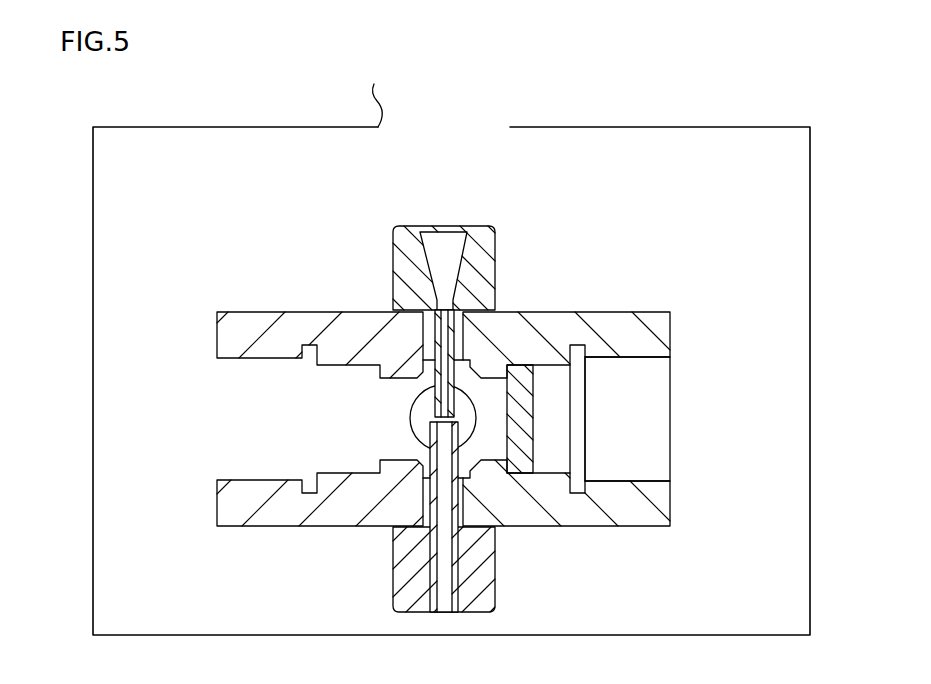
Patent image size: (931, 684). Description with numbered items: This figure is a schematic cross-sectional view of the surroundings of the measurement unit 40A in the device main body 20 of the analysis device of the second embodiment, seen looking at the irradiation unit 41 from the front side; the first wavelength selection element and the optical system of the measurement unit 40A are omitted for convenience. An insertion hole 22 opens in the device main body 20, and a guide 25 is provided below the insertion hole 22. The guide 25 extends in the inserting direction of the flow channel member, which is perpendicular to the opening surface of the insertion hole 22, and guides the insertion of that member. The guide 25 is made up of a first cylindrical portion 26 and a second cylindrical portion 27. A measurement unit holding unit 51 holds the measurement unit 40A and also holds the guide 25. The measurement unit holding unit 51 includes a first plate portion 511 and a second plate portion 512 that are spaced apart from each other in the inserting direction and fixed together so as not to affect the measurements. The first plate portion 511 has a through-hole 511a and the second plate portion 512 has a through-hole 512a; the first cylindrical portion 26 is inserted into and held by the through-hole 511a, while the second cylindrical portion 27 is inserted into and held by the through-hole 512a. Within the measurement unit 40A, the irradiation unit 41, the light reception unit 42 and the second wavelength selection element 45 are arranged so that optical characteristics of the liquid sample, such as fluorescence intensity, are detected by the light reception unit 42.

The device main body 20 is at (632, 127).
The insertion hole 22 is at (373, 94).
The guide 25 is at (469, 231).
The first cylindrical portion 26 is at (495, 242).
The second cylindrical portion 27 is at (485, 517).
The measurement unit 40A is at (727, 220).
The irradiation unit 41 is at (423, 431).
The light reception unit 42 is at (613, 417).
The second wavelength selection element 45 is at (517, 372).
The measurement unit holding unit 51 is at (298, 377).
The first plate portion 511 is at (217, 336).
The through-hole 511a is at (434, 348).
The second plate portion 512 is at (217, 506).
The through-hole 512a is at (456, 505).